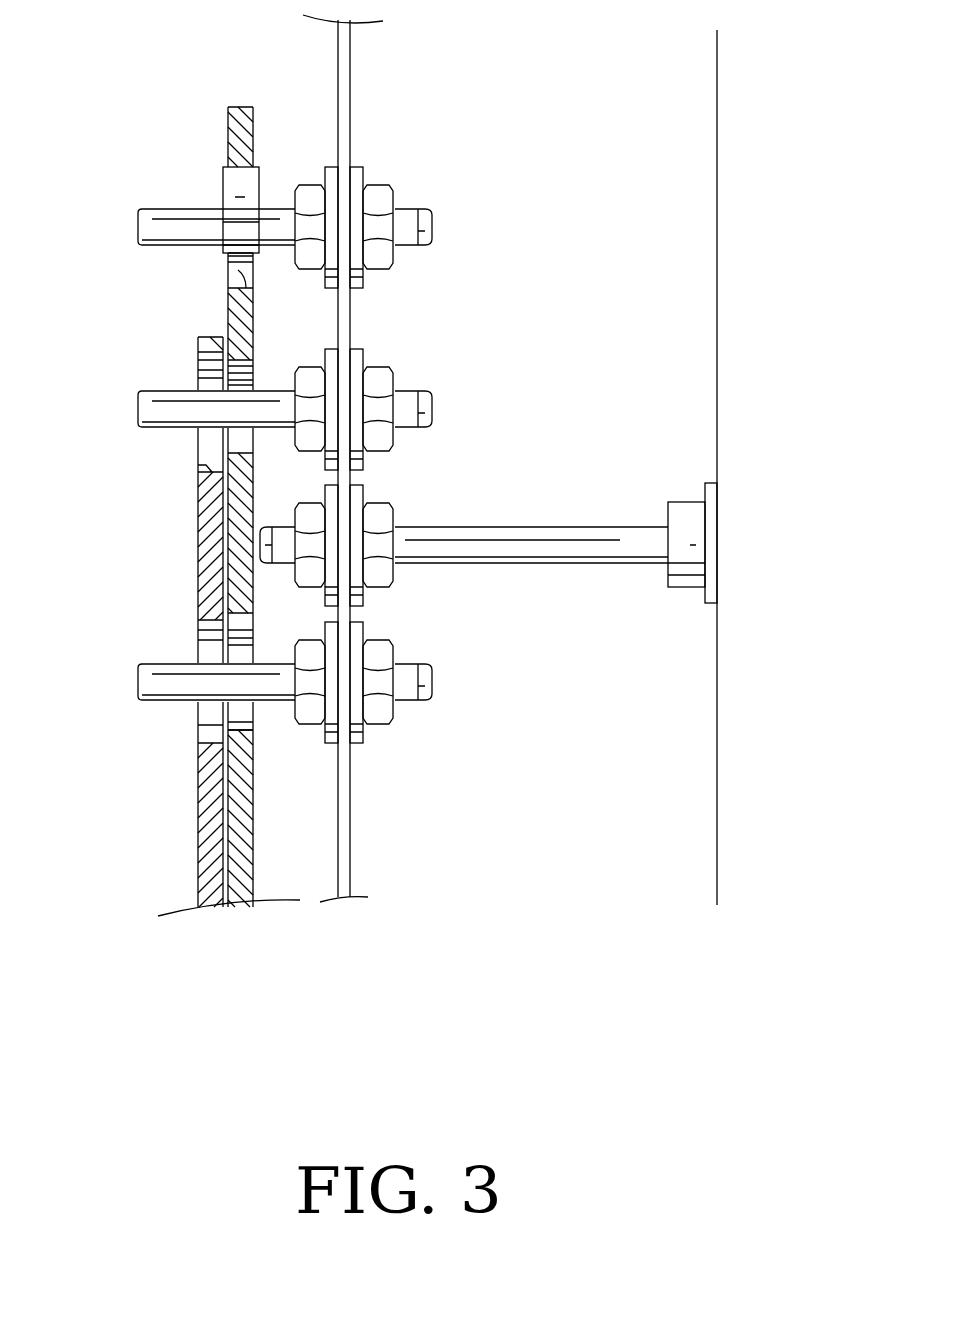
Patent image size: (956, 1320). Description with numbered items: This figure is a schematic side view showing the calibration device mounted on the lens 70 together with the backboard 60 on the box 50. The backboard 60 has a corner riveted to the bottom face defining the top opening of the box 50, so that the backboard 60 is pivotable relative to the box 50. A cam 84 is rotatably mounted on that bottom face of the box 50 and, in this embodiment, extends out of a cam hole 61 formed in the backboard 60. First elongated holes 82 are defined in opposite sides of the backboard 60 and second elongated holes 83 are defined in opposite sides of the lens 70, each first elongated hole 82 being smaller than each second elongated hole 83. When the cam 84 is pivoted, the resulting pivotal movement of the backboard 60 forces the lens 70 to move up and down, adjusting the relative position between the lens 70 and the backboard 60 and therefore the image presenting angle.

The box 50 is at (350, 96).
The backboard 60 is at (247, 870).
The cam hole 61 is at (232, 268).
The lens 70 is at (210, 876).
The first elongated holes 82 is at (250, 732).
The second elongated holes 83 is at (213, 470).
The cam 84 is at (228, 186).